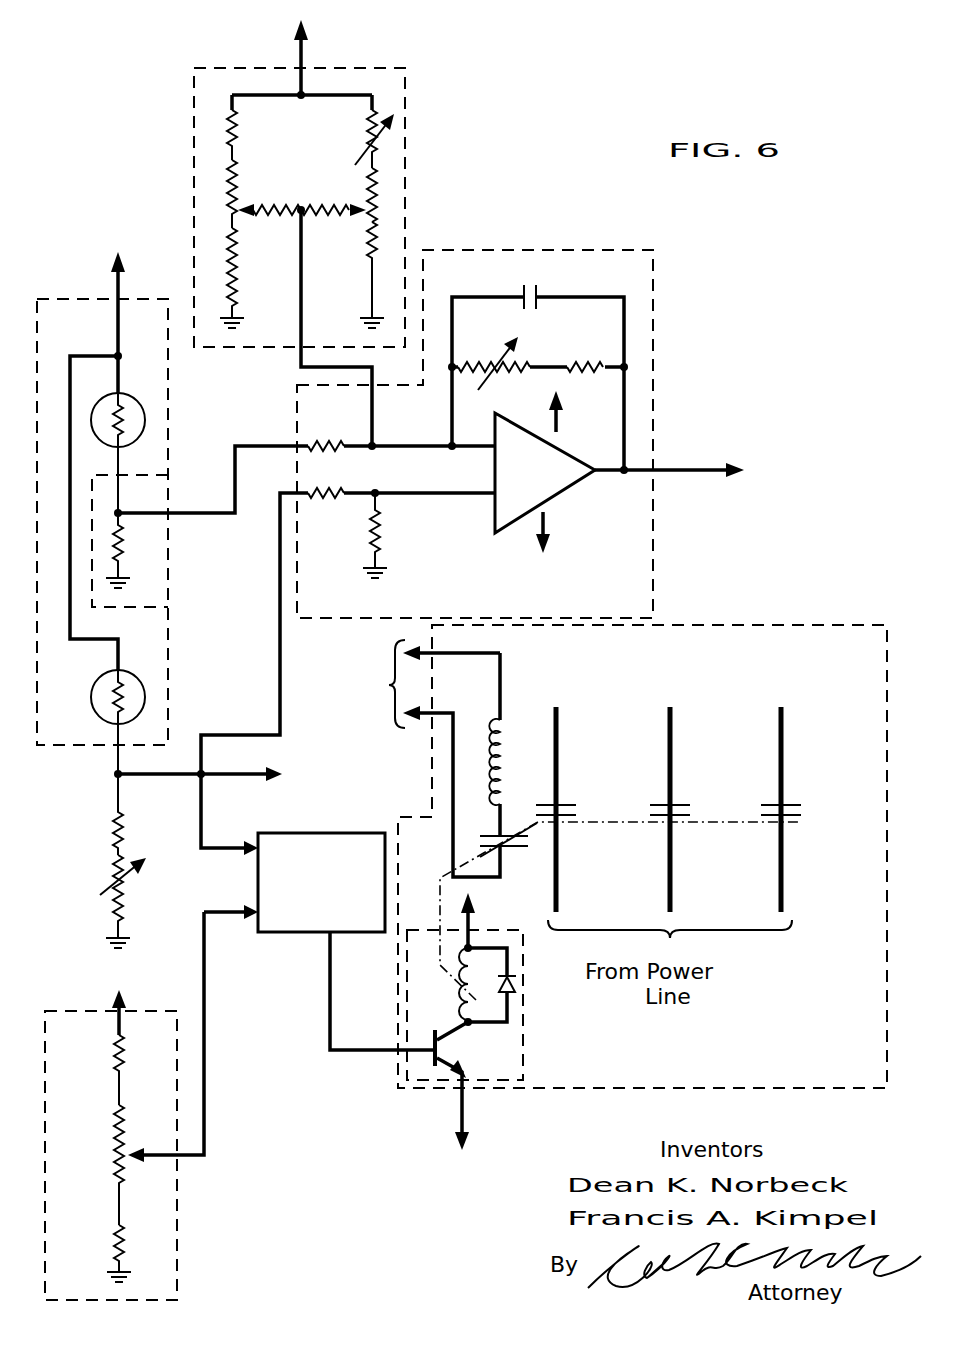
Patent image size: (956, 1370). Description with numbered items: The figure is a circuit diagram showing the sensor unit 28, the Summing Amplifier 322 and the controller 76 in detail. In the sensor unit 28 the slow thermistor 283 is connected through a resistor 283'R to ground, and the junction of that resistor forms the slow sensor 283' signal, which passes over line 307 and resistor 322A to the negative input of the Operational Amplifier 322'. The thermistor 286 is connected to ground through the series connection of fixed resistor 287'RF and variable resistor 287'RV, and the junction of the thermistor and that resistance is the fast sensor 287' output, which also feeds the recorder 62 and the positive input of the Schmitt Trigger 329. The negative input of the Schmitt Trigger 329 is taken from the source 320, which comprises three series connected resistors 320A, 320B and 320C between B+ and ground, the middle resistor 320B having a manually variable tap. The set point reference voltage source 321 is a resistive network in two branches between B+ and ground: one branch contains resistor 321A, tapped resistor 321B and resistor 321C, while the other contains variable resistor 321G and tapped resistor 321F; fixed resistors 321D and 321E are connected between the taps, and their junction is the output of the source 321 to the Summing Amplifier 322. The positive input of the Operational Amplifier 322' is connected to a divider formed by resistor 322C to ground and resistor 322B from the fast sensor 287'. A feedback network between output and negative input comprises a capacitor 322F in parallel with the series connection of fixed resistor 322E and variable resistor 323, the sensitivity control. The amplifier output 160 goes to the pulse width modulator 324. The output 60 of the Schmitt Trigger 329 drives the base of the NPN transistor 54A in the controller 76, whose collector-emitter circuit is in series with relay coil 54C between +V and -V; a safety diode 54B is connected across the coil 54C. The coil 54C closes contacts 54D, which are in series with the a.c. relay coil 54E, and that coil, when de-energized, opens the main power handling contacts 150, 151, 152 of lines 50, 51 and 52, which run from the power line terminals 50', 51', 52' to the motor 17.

The sensor unit 28 is at (82, 299).
The slow thermistor 283 is at (172, 435).
The slow sensor 283' is at (200, 526).
The resistor 283'R is at (153, 550).
The slow sensor output line 307 is at (218, 515).
The thermistor 286 is at (95, 712).
The fast sensor 287' is at (211, 827).
The fixed resistor 287'RF is at (70, 814).
The variable resistor 287'RV is at (83, 901).
The recorder 62 is at (294, 776).
The source 320 is at (178, 1196).
The resistor 320A is at (112, 1048).
The middle resistor 320B is at (112, 1140).
The resistor 320C is at (113, 1227).
The set point reference voltage source 321 is at (405, 140).
The resistor 321A is at (234, 125).
The tapped resistor 321B is at (239, 189).
The resistor 321C is at (238, 280).
The fixed resistor 321D is at (284, 202).
The fixed resistor 321E is at (326, 210).
The tapped resistor 321F is at (367, 246).
The variable resistor 321G is at (355, 131).
The Summing Amplifier 322 is at (475, 435).
The resistor 322A is at (330, 441).
The resistor 322B is at (322, 506).
The resistor 322C is at (372, 542).
The fixed resistor 322E is at (578, 362).
The capacitor 322F is at (540, 289).
The Operational Amplifier 322' is at (557, 472).
The variable resistor 323 is at (478, 358).
The amplifier output line 160 is at (678, 468).
The pulse width modulator 324 is at (799, 470).
The Schmitt Trigger 329 is at (298, 970).
The output 60 is at (330, 1025).
The controller 76 is at (763, 1056).
The NPN transistor 54A is at (425, 1137).
The safety diode 54B is at (517, 988).
The relay coil 54C is at (460, 1002).
The contacts 54D is at (490, 831).
The a.c. relay coil 54E is at (498, 733).
The motor 17 is at (792, 693).
The line 50 is at (807, 803).
The line 51 is at (697, 803).
The line 52 is at (586, 803).
The main power handling contact 150 is at (791, 805).
The main power handling contact 151 is at (680, 805).
The main power handling contact 152 is at (566, 805).
The power line terminal 50' is at (814, 915).
The power line terminal 51' is at (703, 915).
The power line terminal 52' is at (590, 915).